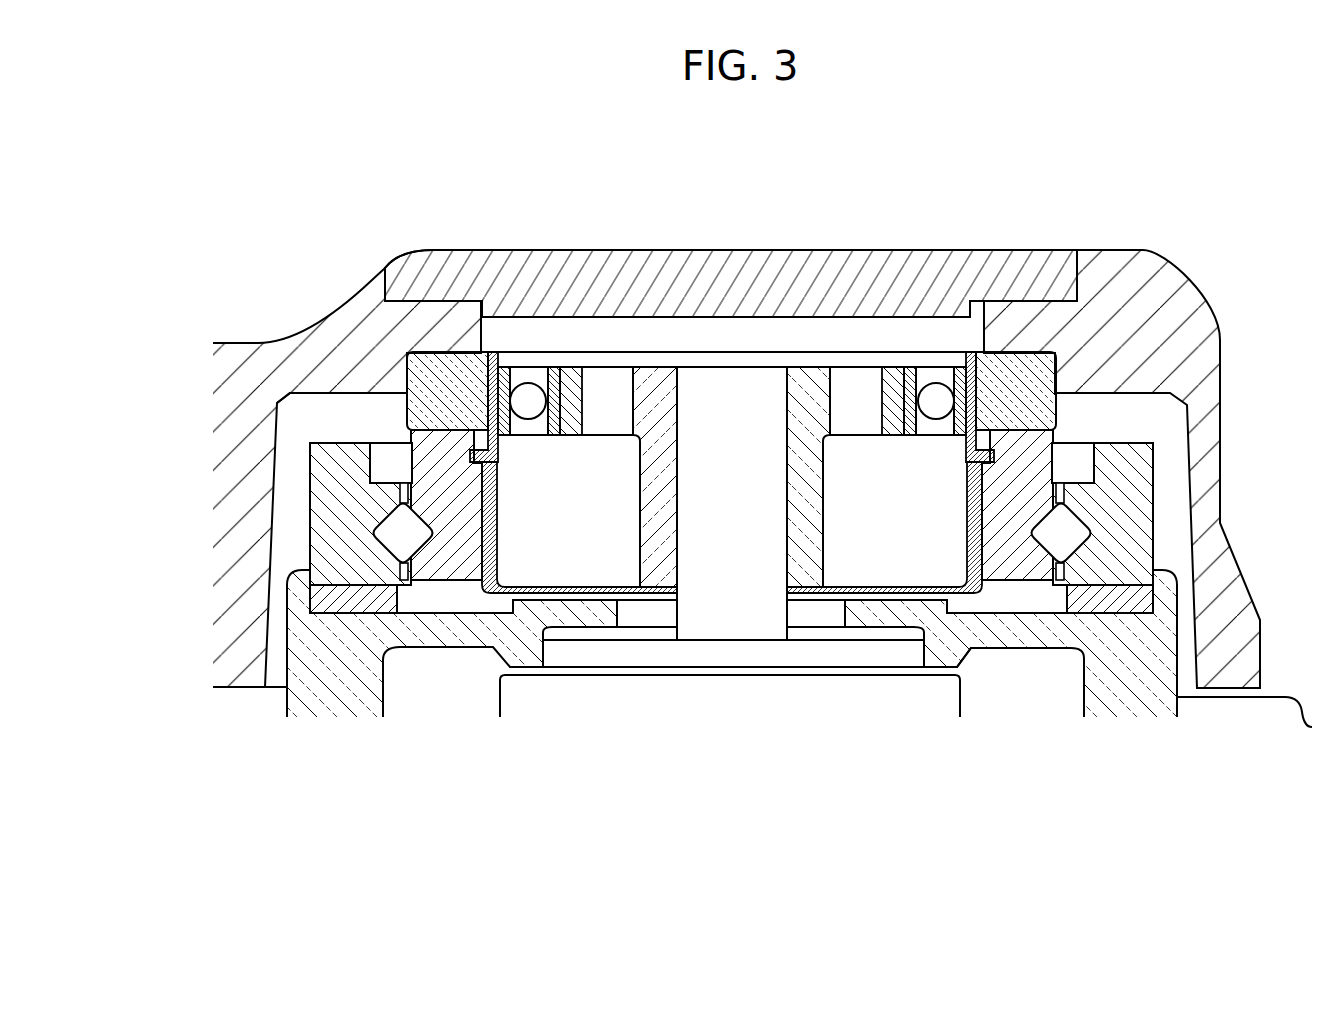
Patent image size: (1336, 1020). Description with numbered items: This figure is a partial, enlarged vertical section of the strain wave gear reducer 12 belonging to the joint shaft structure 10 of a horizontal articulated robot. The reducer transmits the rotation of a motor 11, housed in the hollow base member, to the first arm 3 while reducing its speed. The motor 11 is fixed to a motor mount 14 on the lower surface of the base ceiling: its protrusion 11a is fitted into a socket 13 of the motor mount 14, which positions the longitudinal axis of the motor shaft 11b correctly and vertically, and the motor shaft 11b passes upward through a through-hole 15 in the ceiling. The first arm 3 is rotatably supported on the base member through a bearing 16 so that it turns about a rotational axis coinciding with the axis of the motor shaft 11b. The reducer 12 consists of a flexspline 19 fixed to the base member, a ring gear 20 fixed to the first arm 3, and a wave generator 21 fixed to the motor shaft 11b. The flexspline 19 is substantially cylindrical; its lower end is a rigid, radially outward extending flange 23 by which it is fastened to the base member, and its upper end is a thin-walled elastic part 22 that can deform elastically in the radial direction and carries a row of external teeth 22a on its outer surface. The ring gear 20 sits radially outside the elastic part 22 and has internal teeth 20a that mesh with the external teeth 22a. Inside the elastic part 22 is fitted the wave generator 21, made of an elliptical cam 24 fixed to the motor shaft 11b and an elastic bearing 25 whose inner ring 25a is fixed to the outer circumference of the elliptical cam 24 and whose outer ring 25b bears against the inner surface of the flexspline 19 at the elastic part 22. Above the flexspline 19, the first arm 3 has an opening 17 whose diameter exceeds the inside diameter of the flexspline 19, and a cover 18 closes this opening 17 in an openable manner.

The first arm 3 is at (252, 327).
The joint shaft structure 10 is at (1180, 180).
The motor 11 is at (488, 710).
The protrusion 11a is at (944, 651).
The motor shaft 11b is at (788, 619).
The strain wave gear reducer 12 is at (338, 420).
The socket 13 is at (558, 658).
The motor mount 14 is at (596, 645).
The through-hole 15 is at (620, 614).
The bearing 16 is at (310, 514).
The opening 17 is at (407, 285).
The cover 18 is at (603, 250).
The flexspline 19 is at (952, 538).
The ring gear 20 is at (1013, 350).
The internal teeth 20a is at (937, 443).
The wave generator 21 is at (918, 352).
The elastic part 22 is at (958, 566).
The external teeth 22a is at (977, 390).
The flange 23 is at (1153, 600).
The elliptical cam 24 is at (638, 550).
The elastic bearing 25 is at (528, 378).
The inner ring 25a is at (568, 437).
The outer ring 25b is at (522, 437).